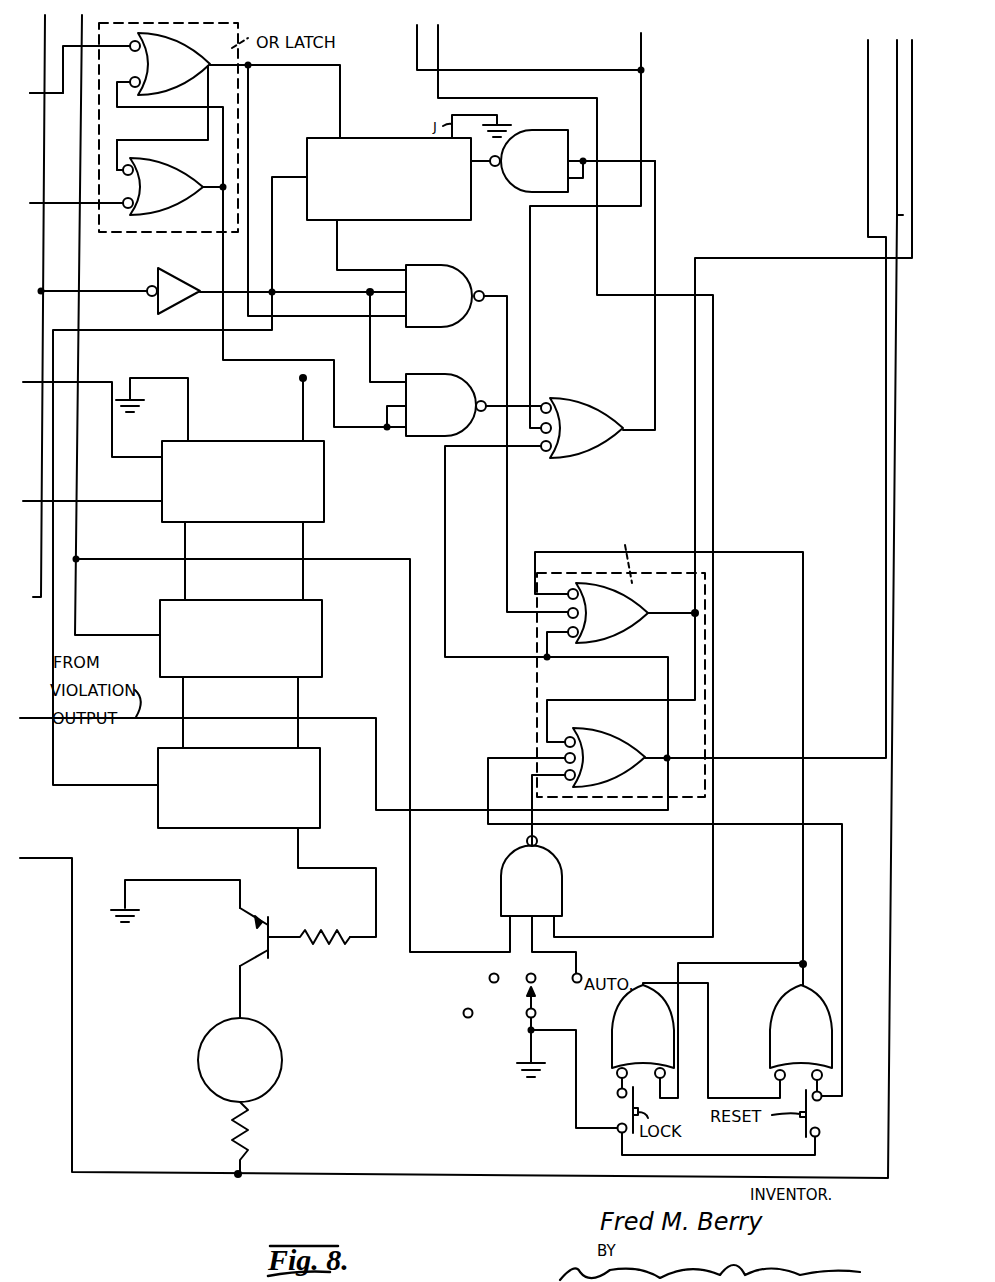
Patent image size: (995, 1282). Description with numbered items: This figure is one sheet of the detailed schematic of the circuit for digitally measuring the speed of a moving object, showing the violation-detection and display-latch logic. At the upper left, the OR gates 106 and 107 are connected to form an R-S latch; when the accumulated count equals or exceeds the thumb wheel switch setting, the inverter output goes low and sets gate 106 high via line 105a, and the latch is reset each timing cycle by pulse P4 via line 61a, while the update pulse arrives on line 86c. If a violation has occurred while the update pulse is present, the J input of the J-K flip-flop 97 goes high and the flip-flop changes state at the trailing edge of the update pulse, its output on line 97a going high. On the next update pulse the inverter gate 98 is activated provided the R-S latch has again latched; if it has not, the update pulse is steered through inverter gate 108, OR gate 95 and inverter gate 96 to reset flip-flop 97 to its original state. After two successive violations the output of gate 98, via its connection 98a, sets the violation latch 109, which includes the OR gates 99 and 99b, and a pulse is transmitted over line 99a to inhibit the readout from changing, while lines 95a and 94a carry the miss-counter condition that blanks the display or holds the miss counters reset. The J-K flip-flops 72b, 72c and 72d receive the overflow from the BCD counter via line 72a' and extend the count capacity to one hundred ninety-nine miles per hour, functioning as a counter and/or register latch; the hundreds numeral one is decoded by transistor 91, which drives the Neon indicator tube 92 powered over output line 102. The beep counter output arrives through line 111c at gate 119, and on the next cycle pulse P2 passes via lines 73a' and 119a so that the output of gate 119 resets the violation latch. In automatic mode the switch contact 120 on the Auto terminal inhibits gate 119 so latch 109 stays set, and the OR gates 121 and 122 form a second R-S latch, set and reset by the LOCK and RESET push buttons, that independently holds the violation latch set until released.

The OR gate 106 is at (190, 75).
The OR gate 107 is at (182, 197).
The line 86c is at (56, 56).
The line 105a is at (38, 95).
The line 73a' is at (79, 160).
The line 61a is at (37, 205).
The J-K flip-flop 97 is at (388, 188).
The line 97a is at (340, 238).
The inverter gate 96 is at (548, 169).
The line 94a is at (417, 32).
The line 95a is at (645, 47).
The line 111c is at (440, 43).
The inverter gate 98 is at (446, 306).
The output line of inverter gate 98 98a is at (505, 576).
The inverter gate 108 is at (454, 415).
The OR gate 95 is at (592, 438).
The line 99a is at (912, 55).
The OR gate 99 is at (618, 622).
The OR gate 99b is at (622, 767).
The violation latch 109 is at (621, 647).
The line 72a' is at (92, 401).
The J-K flip-flop 72b is at (255, 490).
The J-K flip-flop 72c is at (255, 647).
The J-K flip-flop 72d is at (253, 796).
The line 119a is at (268, 565).
The gate 119 is at (548, 890).
The transistor 91 is at (272, 918).
The Neon indicator tube 92 is at (249, 1063).
The output line 102 is at (333, 1172).
The switch contact 120 is at (527, 1001).
The OR gate 121 is at (657, 1045).
The OR gate 122 is at (815, 1045).